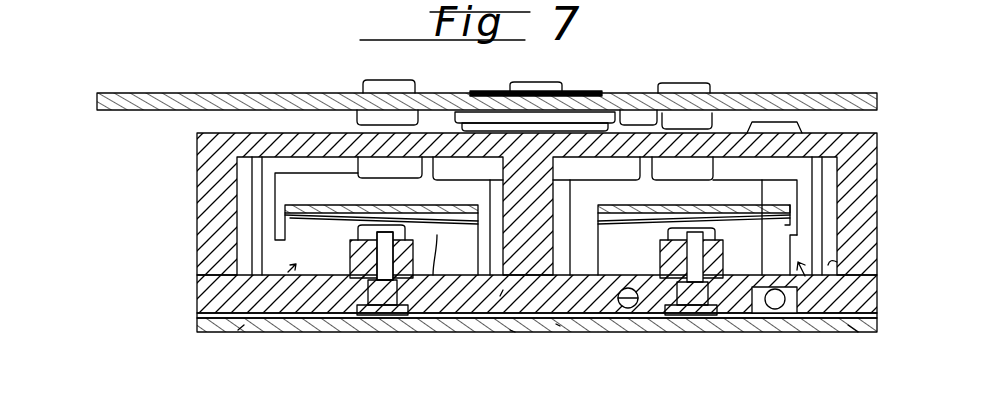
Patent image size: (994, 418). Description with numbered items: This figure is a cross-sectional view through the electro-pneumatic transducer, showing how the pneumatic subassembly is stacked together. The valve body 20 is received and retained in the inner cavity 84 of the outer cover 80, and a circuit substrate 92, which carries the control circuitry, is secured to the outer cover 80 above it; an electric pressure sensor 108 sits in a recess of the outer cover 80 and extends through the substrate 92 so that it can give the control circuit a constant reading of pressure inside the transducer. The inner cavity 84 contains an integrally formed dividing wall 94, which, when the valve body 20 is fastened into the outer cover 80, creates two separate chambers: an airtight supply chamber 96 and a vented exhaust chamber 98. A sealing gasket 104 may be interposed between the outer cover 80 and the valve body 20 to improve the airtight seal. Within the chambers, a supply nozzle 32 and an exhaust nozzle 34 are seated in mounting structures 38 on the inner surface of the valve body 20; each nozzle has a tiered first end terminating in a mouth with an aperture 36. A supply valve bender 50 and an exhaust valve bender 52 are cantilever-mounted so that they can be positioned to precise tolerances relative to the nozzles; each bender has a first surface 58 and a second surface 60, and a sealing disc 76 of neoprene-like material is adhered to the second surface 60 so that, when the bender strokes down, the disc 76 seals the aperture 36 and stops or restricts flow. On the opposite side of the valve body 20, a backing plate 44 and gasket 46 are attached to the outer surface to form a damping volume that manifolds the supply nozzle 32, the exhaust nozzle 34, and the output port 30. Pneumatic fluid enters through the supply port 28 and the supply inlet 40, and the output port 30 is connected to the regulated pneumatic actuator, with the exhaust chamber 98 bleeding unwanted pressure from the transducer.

The valve body 20 is at (206, 325).
The supply port 28 is at (762, 312).
The output port 30 is at (633, 309).
The supply nozzle 32 is at (690, 284).
The exhaust nozzle 34 is at (302, 332).
The aperture 36 is at (212, 276).
The mounting structure 38 is at (396, 300).
The supply inlet 40 is at (806, 277).
The backing plate 44 is at (512, 331).
The gasket 46 is at (558, 326).
The supply valve bender 50 is at (787, 210).
The exhaust valve bender 52 is at (300, 216).
The first surface 58 is at (335, 201).
The second surface 60 is at (437, 236).
The sealing disc 76 is at (430, 226).
The outer cover 80 is at (210, 155).
The inner cavity 84 is at (828, 263).
The circuit substrate 92 is at (270, 94).
The dividing wall 94 is at (500, 298).
The supply chamber 96 is at (850, 331).
The exhaust chamber 98 is at (240, 332).
The sealing gasket 104 is at (200, 311).
The electric pressure sensor 108 is at (565, 91).